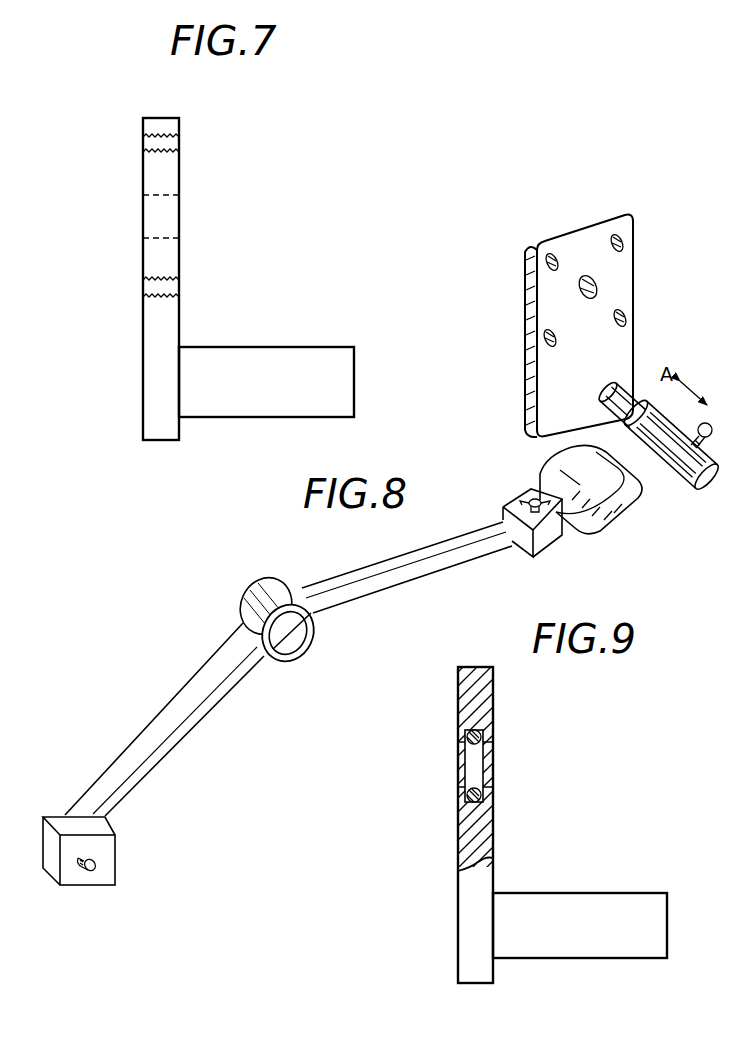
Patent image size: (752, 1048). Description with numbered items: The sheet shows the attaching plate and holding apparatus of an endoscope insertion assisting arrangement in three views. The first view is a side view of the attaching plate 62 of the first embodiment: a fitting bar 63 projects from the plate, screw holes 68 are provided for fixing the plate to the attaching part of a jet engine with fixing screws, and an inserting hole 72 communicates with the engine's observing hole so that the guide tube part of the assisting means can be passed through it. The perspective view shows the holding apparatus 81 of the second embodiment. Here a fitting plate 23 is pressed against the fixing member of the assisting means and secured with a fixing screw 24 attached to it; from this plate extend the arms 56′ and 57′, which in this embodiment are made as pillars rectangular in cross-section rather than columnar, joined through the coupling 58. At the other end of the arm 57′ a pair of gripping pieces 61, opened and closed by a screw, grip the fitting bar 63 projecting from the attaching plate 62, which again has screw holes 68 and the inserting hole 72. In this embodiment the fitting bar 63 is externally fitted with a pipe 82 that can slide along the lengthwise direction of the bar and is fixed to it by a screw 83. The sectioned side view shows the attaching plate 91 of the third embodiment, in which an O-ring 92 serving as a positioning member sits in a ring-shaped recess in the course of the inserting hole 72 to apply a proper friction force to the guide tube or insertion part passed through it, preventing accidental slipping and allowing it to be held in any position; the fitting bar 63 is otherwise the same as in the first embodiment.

In FIG. 7, the attaching plate 62 is at (152, 373).
In FIG. 8, the attaching plate 62 is at (527, 297).
In FIG. 7, the fitting bar 63 is at (284, 347).
In FIG. 8, the fitting bar 63 is at (623, 386).
In FIG. 9, the fitting bar 63 is at (573, 893).
In FIG. 7, the screw holes 68 is at (163, 141).
In FIG. 8, the screw holes 68 is at (550, 256).
In FIG. 7, the inserting hole 72 is at (158, 237).
In FIG. 8, the inserting hole 72 is at (598, 283).
In FIG. 9, the inserting hole 72 is at (490, 786).
In FIG. 8, the pipe 82 is at (660, 481).
In FIG. 8, the screw 83 is at (711, 428).
In FIG. 8, the arm 57′ is at (398, 591).
In FIG. 8, the arm 56′ is at (212, 697).
In FIG. 8, the ring coupling 58 is at (275, 598).
In FIG. 8, the gripping pieces 61 is at (584, 522).
In FIG. 8, the holding apparatus 81 is at (238, 615).
In FIG. 8, the fitting plate 23 is at (66, 826).
In FIG. 8, the fixing screw 24 is at (97, 863).
In FIG. 9, the attaching plate 91 is at (456, 840).
In FIG. 9, the O-ring 92 is at (464, 740).